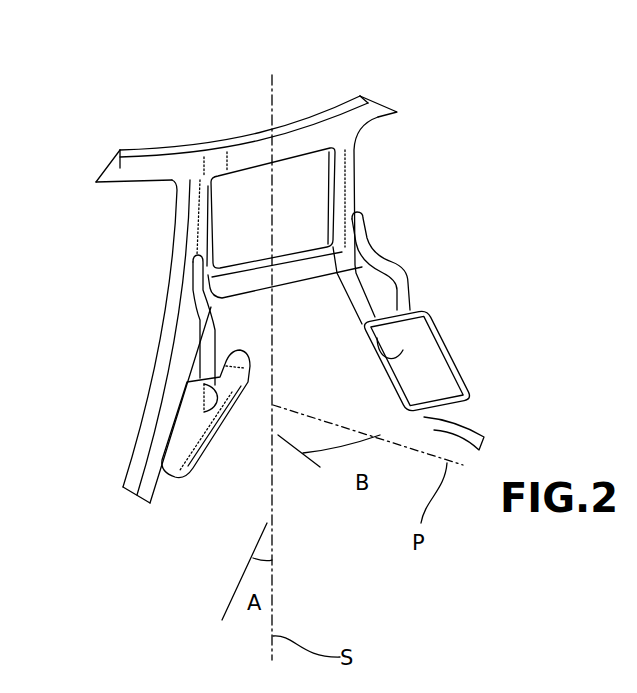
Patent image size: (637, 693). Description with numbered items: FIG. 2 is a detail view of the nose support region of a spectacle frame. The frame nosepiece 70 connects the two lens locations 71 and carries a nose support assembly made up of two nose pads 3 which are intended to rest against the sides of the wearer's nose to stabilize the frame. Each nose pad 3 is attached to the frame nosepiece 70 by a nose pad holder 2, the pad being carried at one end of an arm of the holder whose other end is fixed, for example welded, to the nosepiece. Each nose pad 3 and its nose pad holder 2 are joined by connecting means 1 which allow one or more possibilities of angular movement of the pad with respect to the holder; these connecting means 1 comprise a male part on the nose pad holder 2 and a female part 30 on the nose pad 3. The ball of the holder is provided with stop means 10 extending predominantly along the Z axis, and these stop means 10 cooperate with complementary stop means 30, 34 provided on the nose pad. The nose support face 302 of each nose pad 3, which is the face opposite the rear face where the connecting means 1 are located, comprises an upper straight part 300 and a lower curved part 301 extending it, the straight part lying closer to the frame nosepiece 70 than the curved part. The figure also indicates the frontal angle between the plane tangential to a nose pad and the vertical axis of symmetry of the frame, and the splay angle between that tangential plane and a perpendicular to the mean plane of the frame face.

The connecting means 1 is at (282, 343).
The nose pad holder 2 is at (197, 287).
The nose pad 3 is at (320, 388).
The stop means 10 is at (187, 391).
The female part 30 is at (192, 422).
The complementary stop means 34 is at (237, 384).
The frame nosepiece 70 is at (259, 265).
The lens location 71 is at (120, 165).
The upper straight part 300 is at (408, 340).
The lower curved part 301 is at (440, 397).
The nose support face 302 is at (374, 366).